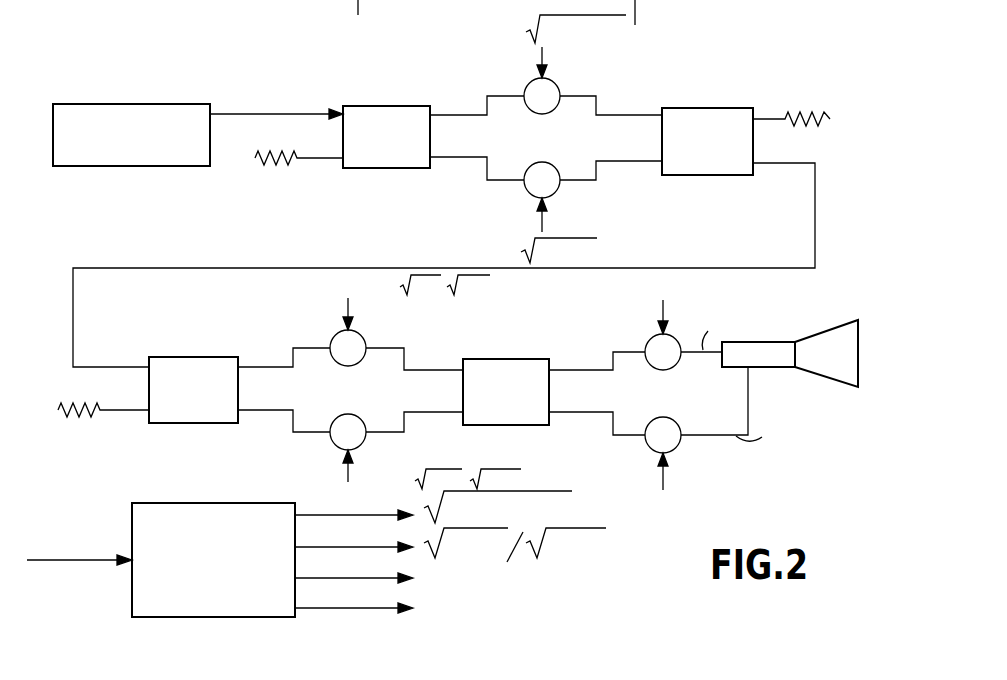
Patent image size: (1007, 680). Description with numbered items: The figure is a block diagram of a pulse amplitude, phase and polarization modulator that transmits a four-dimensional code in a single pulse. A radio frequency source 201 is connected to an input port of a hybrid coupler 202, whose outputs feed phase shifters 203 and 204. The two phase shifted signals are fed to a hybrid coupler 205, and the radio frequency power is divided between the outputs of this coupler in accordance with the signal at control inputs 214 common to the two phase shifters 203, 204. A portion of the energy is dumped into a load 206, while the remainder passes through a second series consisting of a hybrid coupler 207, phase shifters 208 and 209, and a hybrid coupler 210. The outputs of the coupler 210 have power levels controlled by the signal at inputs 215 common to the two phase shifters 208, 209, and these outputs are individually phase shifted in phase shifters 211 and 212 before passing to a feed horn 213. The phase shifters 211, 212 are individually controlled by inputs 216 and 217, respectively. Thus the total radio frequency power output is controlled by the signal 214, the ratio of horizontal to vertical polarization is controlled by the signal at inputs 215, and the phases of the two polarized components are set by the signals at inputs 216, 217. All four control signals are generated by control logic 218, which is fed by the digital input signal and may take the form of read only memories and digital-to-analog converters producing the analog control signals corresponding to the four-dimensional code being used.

The radio frequency source 201 is at (174, 104).
The hybrid coupler 202 is at (388, 106).
The phase shifter 203 is at (556, 88).
The phase shifter 204 is at (556, 197).
The hybrid coupler 205 is at (708, 108).
The load 206 is at (814, 110).
The hybrid coupler 207 is at (190, 357).
The phase shifter 208 is at (362, 333).
The phase shifter 209 is at (361, 447).
The hybrid coupler 210 is at (508, 359).
The phase shifter 211 is at (648, 337).
The phase shifter 212 is at (650, 448).
The feed horn 213 is at (826, 326).
The control inputs 214 is at (542, 50).
The control inputs 215 is at (347, 300).
The control input 216 is at (665, 318).
The control input 217 is at (665, 488).
The control logic 218 is at (190, 503).